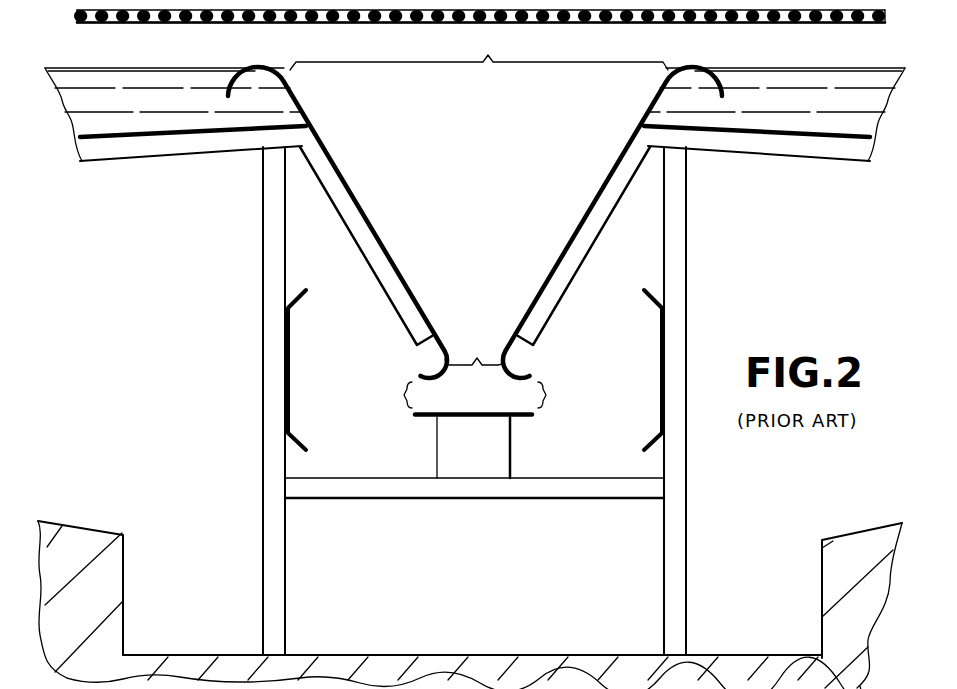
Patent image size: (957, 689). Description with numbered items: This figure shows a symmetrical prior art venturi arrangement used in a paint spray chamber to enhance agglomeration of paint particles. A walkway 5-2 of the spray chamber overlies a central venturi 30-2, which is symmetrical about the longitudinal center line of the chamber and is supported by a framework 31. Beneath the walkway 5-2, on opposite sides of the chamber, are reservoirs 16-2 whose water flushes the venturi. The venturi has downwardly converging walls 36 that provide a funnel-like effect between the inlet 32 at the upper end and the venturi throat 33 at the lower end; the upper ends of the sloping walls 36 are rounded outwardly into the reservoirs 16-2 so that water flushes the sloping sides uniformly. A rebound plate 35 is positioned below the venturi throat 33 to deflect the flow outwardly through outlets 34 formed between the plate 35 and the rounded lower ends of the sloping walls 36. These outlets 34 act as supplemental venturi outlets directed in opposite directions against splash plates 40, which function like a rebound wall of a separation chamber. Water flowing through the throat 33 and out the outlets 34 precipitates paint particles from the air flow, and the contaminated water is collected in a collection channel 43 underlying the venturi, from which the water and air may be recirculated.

The walkway 5-2 is at (299, 24).
The reservoirs 16-2 is at (145, 80).
The inlet 32 is at (479, 53).
The central venturi 30-2 is at (438, 190).
The downwardly converging walls 36 is at (370, 226).
The framework 31 is at (672, 249).
The splash plates 40 is at (289, 342).
The venturi throat 33 is at (474, 378).
The outlets 34 is at (474, 395).
The rebound plate 35 is at (485, 417).
The collection channel 43 is at (123, 607).